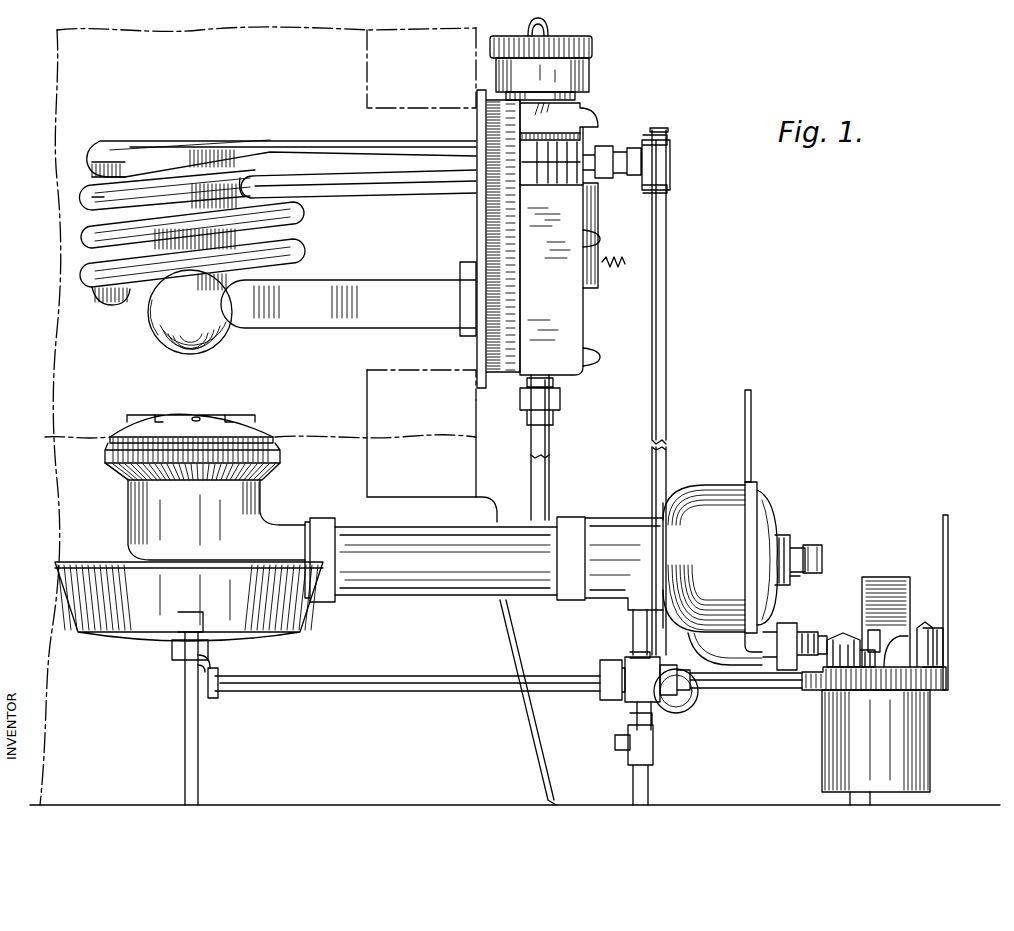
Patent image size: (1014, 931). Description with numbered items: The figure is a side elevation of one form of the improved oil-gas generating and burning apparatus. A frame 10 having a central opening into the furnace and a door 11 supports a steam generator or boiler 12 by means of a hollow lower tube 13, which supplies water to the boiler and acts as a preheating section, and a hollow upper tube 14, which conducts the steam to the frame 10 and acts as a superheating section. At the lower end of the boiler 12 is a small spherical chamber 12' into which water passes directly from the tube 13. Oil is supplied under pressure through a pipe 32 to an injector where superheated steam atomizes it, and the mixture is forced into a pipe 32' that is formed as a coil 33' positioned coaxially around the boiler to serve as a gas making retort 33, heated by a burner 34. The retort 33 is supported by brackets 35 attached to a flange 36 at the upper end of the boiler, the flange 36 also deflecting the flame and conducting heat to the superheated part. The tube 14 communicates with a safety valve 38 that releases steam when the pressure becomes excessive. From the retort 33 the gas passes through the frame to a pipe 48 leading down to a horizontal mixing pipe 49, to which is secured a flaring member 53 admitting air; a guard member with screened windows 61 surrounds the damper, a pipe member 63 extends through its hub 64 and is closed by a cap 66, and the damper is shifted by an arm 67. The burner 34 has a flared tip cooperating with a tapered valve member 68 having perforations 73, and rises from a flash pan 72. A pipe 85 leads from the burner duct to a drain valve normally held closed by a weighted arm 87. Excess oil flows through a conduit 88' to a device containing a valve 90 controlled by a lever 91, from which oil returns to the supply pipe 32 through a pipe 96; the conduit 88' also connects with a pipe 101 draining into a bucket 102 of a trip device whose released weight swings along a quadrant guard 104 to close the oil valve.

The frame 10 is at (475, 89).
The door 11 is at (598, 220).
The steam generator or boiler 12 is at (281, 142).
The spherical chamber 12' is at (181, 318).
The lower supporting member or tube 13 is at (412, 292).
The upper supporting member or tube 14 is at (340, 186).
The oil supply pipe 32 is at (682, 391).
The steam and oil mixture pipe 32' is at (656, 164).
The gas making retort 33 is at (161, 228).
The coil 33' is at (54, 211).
The burner 34 is at (270, 410).
The brackets 35 is at (226, 190).
The flange 36 is at (101, 146).
The safety valve 38 is at (607, 68).
The pipe 48 is at (543, 478).
The mixing pipe or chamber 49 is at (484, 563).
The member 53 is at (606, 596).
The openings or windows 61 is at (781, 504).
The pipe member 63 is at (792, 572).
The hub 64 is at (784, 540).
The cap 66 is at (815, 556).
The arm 67 is at (752, 402).
The closing or valve member (deflector) 68 is at (270, 437).
The flash pan 72 is at (189, 683).
The perforations 73 is at (197, 417).
The pipe 85 is at (413, 676).
The weighted arm 87 is at (668, 702).
The conduit or duct 88' is at (795, 632).
The valve 90 is at (902, 630).
The handle or lever 91 is at (950, 535).
The pipe 96 is at (746, 684).
The pipe 101 is at (838, 634).
The bucket 102 is at (874, 736).
The quadrant guard 104 is at (879, 578).